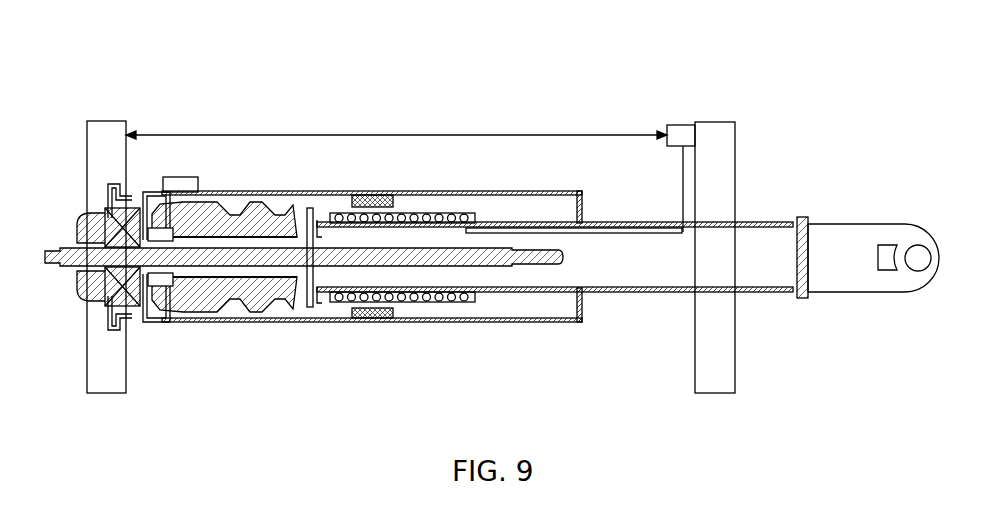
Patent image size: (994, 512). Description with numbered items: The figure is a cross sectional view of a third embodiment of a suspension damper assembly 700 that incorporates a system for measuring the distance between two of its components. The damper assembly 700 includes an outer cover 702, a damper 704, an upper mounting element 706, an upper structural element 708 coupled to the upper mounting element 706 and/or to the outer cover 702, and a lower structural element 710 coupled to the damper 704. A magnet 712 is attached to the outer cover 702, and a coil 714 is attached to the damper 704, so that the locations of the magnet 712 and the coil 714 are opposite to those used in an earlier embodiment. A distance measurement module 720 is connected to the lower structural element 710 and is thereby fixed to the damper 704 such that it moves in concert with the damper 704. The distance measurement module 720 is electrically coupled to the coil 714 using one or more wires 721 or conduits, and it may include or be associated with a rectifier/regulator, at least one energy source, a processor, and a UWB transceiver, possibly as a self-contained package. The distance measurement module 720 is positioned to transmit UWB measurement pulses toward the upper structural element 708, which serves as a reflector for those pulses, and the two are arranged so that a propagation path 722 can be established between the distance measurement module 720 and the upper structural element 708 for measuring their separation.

The suspension damper assembly 700 is at (552, 65).
The outer cover 702 is at (508, 322).
The damper 704 is at (636, 292).
The upper mounting element 706 is at (78, 224).
The upper structural element 708 is at (109, 121).
The lower structural element 710 is at (714, 122).
The magnet 712 is at (397, 194).
The coil 714 is at (443, 212).
The distance measurement module 720 is at (681, 125).
The wires 721 is at (636, 233).
The propagation path 722 is at (396, 135).